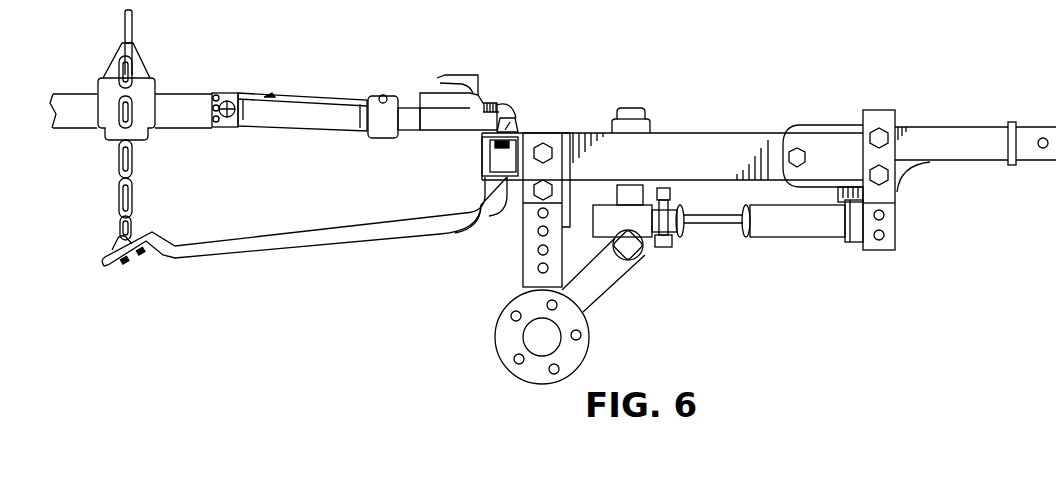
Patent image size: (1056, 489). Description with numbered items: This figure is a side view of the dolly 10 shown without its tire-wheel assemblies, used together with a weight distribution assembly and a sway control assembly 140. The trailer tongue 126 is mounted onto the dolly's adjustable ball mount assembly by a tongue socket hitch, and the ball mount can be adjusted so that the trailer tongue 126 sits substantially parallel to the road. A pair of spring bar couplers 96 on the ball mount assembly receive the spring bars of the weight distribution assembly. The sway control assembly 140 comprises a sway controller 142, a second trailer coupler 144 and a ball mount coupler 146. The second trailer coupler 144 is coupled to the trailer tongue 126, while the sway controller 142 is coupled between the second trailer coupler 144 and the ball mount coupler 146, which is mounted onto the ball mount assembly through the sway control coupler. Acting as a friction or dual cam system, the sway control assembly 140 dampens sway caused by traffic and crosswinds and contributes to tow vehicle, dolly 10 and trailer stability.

The dolly 10 is at (682, 92).
The spring bar couplers 96 is at (478, 152).
The trailer tongue 126 is at (433, 97).
The sway control assembly 140 is at (333, 145).
The sway controller 142 is at (313, 113).
The second trailer coupler 144 is at (233, 93).
The ball mount coupler 146 is at (506, 126).